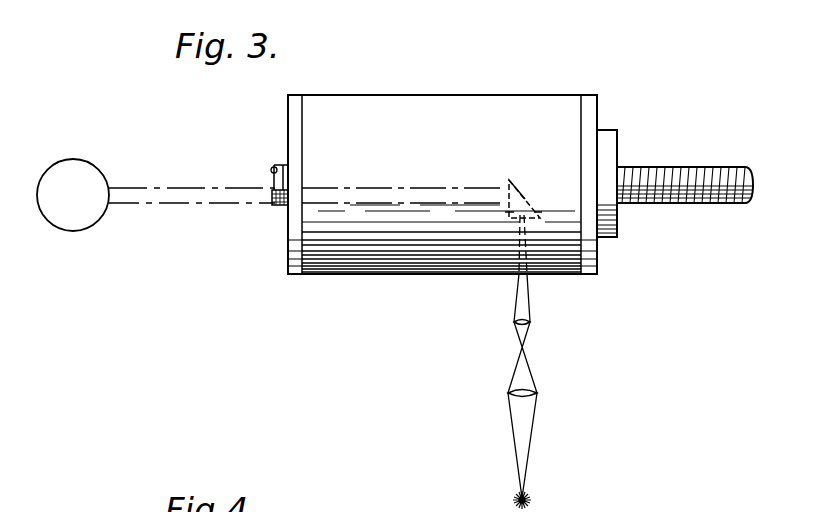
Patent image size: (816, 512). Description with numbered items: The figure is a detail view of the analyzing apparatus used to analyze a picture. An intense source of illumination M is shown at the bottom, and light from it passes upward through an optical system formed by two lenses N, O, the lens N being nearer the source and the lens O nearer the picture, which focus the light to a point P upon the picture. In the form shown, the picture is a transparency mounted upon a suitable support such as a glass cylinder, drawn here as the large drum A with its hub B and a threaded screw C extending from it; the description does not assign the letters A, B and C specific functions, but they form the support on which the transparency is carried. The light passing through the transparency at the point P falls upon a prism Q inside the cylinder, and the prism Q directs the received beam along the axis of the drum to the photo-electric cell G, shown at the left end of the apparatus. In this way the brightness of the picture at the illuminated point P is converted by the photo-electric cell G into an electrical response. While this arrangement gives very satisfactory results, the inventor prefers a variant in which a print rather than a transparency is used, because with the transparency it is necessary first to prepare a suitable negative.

The photo-electric cell G is at (51, 233).
The drum A is at (434, 184).
The prism Q is at (525, 198).
The hub B is at (610, 238).
The threaded screw C is at (690, 205).
The point P is at (500, 276).
The lens O is at (535, 303).
The lens N is at (532, 363).
The source of illumination M is at (530, 452).